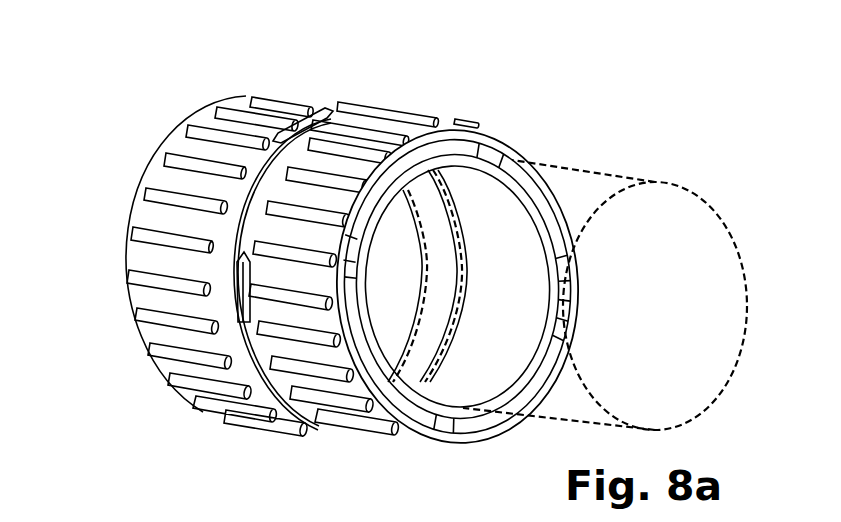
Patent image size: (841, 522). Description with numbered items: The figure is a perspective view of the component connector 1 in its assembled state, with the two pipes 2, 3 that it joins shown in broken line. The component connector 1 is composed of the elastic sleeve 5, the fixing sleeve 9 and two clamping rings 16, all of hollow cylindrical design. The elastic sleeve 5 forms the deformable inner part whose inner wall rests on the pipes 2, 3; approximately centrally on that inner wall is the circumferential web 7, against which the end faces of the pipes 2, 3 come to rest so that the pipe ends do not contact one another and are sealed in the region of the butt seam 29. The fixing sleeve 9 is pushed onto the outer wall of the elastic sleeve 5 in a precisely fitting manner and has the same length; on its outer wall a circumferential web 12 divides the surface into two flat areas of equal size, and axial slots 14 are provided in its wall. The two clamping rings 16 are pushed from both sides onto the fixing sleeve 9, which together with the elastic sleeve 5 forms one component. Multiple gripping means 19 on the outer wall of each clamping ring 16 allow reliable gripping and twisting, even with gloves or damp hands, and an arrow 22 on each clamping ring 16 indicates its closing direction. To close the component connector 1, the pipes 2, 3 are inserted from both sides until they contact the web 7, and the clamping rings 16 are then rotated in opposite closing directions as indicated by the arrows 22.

The component connector 1 is at (146, 412).
The pipe 2 is at (455, 336).
The pipe 3 is at (740, 363).
The elastic sleeve 5 is at (541, 203).
The circumferential web 7 is at (434, 261).
The fixing sleeve 9 is at (538, 172).
The circumferential web 12 is at (270, 400).
The axial slots 14 is at (481, 149).
The clamping ring 16 is at (178, 142).
The gripping means 19 is at (427, 122).
The arrow 22 is at (307, 117).
The butt seam 29 is at (418, 347).